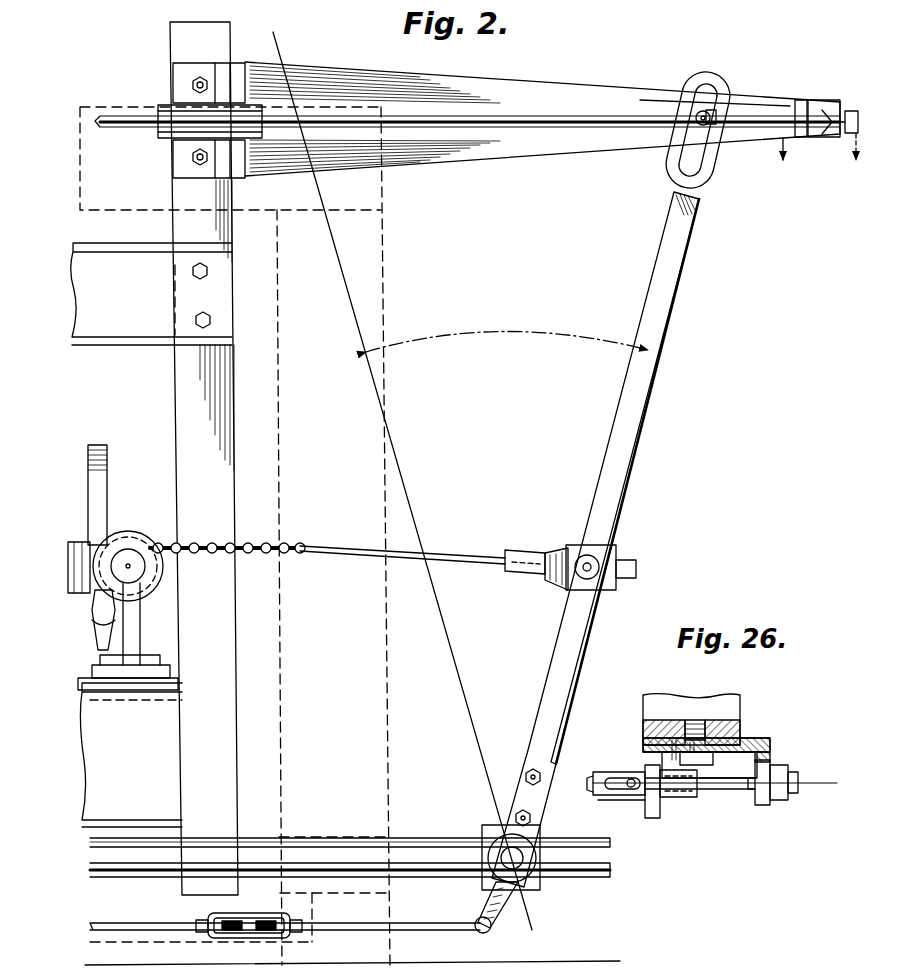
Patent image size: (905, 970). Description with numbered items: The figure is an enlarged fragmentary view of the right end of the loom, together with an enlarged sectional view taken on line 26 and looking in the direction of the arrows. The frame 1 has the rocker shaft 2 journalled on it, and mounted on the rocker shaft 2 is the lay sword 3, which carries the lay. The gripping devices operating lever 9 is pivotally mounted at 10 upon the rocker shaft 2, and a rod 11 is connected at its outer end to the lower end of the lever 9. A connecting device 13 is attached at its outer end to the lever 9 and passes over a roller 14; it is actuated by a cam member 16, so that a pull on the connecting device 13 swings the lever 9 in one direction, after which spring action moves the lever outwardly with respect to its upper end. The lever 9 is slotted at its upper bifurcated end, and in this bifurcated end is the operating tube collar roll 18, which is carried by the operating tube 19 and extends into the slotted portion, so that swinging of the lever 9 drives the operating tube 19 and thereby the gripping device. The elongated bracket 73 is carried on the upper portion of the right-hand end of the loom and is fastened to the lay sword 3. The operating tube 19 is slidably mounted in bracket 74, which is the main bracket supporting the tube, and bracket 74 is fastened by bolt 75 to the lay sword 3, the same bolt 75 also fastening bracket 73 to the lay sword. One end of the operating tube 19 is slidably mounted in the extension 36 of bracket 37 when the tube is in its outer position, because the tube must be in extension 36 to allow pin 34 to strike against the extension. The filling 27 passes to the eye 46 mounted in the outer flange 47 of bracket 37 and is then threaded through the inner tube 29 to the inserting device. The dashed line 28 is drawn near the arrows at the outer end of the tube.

In FIG. 2, the frame 1 is at (386, 750).
In FIG. 2, the rocker shaft 2 is at (422, 845).
In FIG. 2, the lay sword 3 is at (215, 42).
In FIG. 2, the gripping devices operating lever 9 is at (640, 385).
In FIG. 2, the pivot 10 is at (530, 853).
In FIG. 2, the rod 11 is at (422, 922).
In FIG. 2, the connecting device 13 is at (358, 556).
In FIG. 2, the roller 14 is at (135, 540).
In FIG. 2, the cam member 16 is at (96, 497).
In FIG. 2, the operating tube collar roll 18 is at (712, 94).
In FIG. 2, the operating tube 19 is at (635, 102).
In FIG. 26, the operating tube 19 is at (636, 797).
In FIG. 2, the section line 26 is at (784, 160).
In FIG. 26, the filling 27 is at (585, 783).
In FIG. 2, the arrow direction 28 is at (855, 158).
In FIG. 26, the inner tube 29 is at (598, 775).
In FIG. 2, the pin 34 is at (800, 100).
In FIG. 26, the pin 34 is at (634, 778).
In FIG. 2, the extension 36 is at (818, 100).
In FIG. 26, the extension 36 is at (660, 812).
In FIG. 26, the bracket 37 is at (762, 740).
In FIG. 2, the eye 46 is at (852, 111).
In FIG. 26, the eye 46 is at (782, 766).
In FIG. 26, the outer flange 47 is at (763, 805).
In FIG. 2, the elongated bracket 73 is at (535, 82).
In FIG. 26, the elongated bracket 73 is at (698, 706).
In FIG. 2, the bracket 74 is at (170, 107).
In FIG. 2, the bolt 75 is at (196, 80).